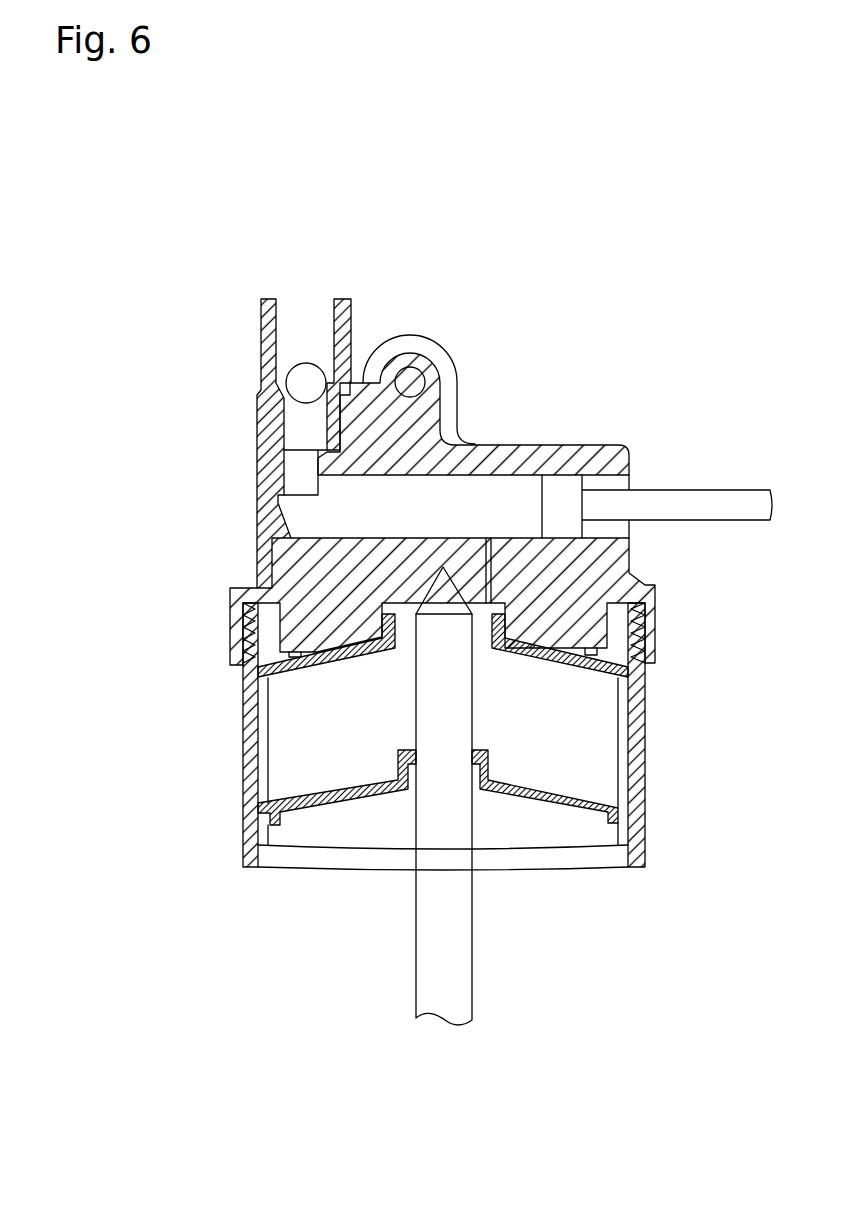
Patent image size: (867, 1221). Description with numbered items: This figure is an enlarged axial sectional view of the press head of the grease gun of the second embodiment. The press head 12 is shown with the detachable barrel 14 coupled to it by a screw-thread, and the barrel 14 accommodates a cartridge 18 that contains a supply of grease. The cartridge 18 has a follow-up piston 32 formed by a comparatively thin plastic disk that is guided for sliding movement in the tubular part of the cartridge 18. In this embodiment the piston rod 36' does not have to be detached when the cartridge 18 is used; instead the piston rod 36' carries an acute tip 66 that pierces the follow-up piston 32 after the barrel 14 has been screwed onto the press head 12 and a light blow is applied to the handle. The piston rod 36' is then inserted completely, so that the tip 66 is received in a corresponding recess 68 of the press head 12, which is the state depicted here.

The press head 12 is at (256, 527).
The barrel 14 is at (243, 818).
The cartridge 18 is at (630, 752).
The follow-up piston 32 is at (531, 780).
The piston rod 36' is at (389, 819).
The acute tip 66 is at (441, 600).
The recess 68 is at (444, 566).